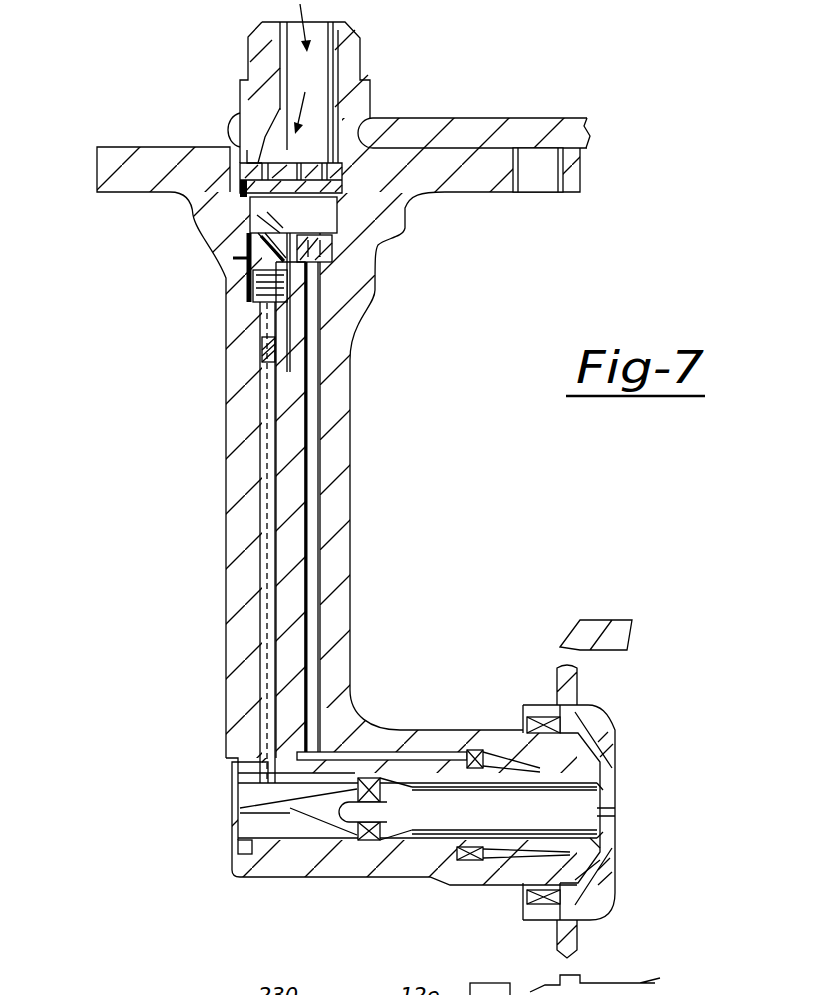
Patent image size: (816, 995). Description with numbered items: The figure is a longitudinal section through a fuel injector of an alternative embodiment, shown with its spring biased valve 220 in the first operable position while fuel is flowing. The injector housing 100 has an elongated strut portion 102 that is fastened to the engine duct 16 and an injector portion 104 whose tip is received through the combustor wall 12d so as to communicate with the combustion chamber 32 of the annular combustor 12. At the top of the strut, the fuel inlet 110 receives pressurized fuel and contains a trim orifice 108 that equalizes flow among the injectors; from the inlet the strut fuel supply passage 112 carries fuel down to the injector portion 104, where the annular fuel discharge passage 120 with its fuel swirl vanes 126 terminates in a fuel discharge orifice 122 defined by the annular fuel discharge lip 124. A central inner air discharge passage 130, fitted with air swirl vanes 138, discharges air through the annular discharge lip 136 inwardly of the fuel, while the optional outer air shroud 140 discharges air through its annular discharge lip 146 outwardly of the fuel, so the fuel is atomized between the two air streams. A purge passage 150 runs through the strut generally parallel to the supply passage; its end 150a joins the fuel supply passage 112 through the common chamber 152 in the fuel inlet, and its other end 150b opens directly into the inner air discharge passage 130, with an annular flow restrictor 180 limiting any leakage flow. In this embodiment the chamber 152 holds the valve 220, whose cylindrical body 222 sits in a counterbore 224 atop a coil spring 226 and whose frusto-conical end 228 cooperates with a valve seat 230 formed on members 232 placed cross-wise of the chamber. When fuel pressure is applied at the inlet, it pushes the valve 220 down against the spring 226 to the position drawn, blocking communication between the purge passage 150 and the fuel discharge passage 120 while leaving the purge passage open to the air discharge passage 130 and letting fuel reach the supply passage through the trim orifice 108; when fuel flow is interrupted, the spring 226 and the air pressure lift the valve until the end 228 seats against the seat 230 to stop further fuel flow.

The annular combustor 12 is at (593, 627).
The combustor wall 12d is at (580, 935).
The engine duct 16 is at (528, 112).
The combustion chamber 32 is at (778, 835).
The injector housing 100 is at (350, 505).
The strut portion 102 is at (259, 577).
The injector portion 104 is at (357, 874).
The trim orifice 108 is at (318, 246).
The fuel inlet 110 is at (317, 77).
The strut fuel supply passage 112 is at (313, 627).
The annular fuel discharge passage 120 is at (495, 752).
The fuel discharge orifice 122 is at (603, 817).
The annular fuel discharge lip 124 is at (600, 812).
The fuel swirl vanes 126 is at (476, 858).
The inner air discharge passage 130 is at (417, 801).
The annular discharge lip 136 is at (590, 838).
The air swirl vanes 138 is at (290, 808).
The outer air shroud 140 is at (601, 713).
The annular discharge lip 146 is at (617, 778).
The purge passage 150 is at (268, 631).
The purge passage end 150a is at (265, 318).
The purge passage end 150b is at (272, 782).
The common chamber 152 is at (335, 207).
The annular flow restrictor 180 is at (265, 350).
The spring biased valve 220 is at (250, 258).
The cylindrical body 222 is at (258, 240).
The counterbore 224 is at (300, 296).
The coil spring 226 is at (258, 290).
The frusto-conical end 228 is at (247, 230).
The valve seat 230 is at (247, 202).
The members 232 is at (248, 165).